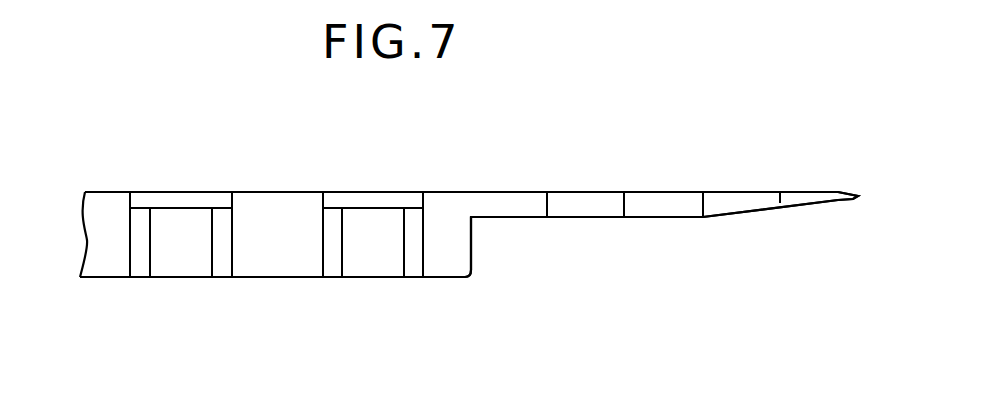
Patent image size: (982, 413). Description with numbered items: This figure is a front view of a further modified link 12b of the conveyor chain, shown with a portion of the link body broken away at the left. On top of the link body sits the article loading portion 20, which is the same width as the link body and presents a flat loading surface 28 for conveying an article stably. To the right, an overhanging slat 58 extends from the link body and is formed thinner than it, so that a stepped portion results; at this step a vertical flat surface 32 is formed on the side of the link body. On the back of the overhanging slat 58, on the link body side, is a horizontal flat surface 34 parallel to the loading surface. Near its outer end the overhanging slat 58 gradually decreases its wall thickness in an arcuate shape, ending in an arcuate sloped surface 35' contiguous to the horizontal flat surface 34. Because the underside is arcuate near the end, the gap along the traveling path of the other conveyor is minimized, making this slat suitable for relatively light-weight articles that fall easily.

The link 12b is at (413, 180).
The article loading portion 20 is at (157, 192).
The flat loading surface 28 is at (267, 192).
The vertical flat surface 32 is at (475, 247).
The horizontal flat surface 34 is at (583, 222).
The overhanging slat 58 is at (652, 200).
The arcuate sloped surface 35' is at (780, 253).